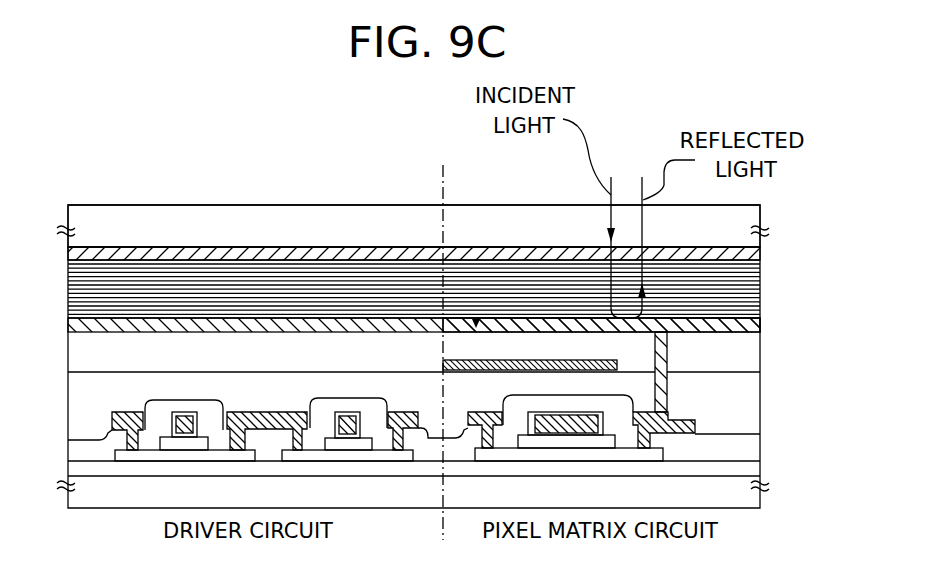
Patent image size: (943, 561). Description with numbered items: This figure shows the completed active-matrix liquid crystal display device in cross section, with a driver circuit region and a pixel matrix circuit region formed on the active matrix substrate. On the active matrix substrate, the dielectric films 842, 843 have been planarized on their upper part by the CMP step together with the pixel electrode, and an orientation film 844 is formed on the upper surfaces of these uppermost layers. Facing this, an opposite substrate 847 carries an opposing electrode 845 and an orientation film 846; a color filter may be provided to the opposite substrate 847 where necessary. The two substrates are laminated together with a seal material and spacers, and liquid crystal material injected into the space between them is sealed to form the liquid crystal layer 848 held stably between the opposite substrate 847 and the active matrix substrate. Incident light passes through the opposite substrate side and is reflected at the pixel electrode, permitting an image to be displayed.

The dielectric film 842 is at (102, 323).
The dielectric film 843 is at (476, 325).
The orientation film 844 is at (208, 313).
The opposing electrode 845 is at (90, 242).
The orientation film 846 is at (183, 247).
The opposite substrate 847 is at (272, 236).
The liquid crystal layer 848 is at (343, 288).